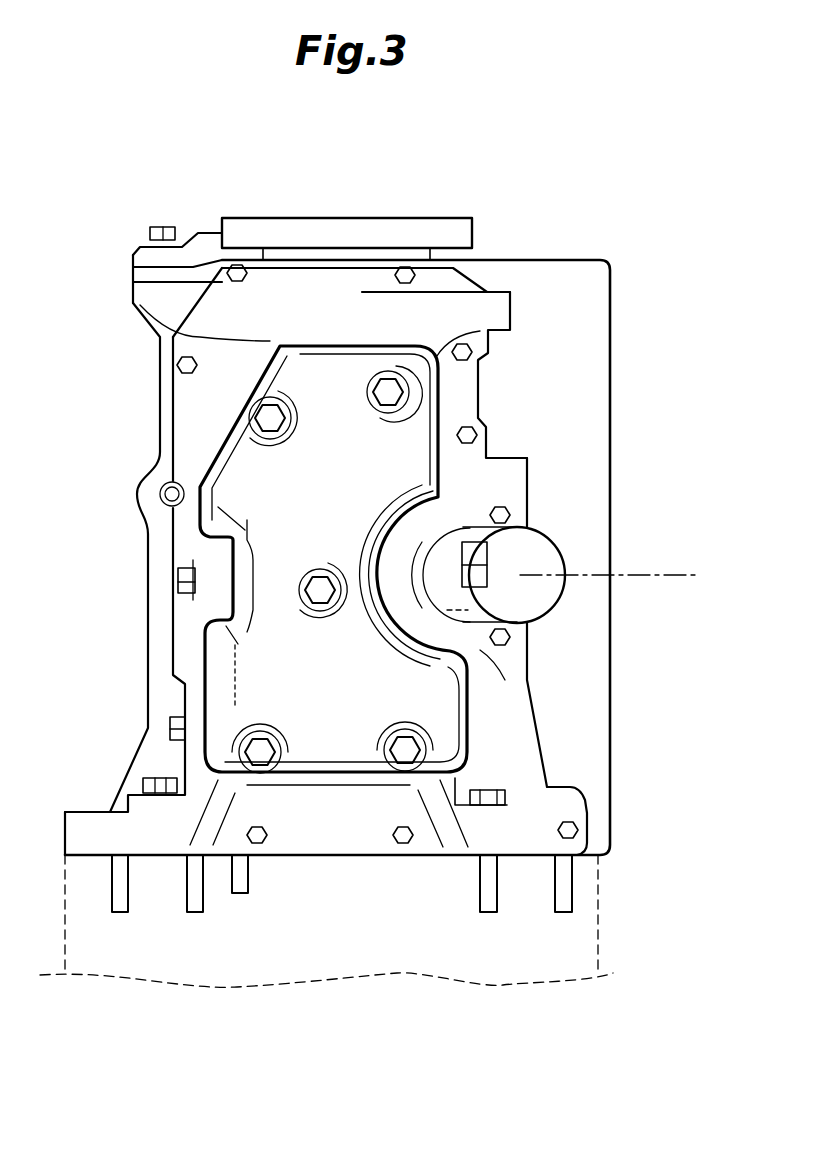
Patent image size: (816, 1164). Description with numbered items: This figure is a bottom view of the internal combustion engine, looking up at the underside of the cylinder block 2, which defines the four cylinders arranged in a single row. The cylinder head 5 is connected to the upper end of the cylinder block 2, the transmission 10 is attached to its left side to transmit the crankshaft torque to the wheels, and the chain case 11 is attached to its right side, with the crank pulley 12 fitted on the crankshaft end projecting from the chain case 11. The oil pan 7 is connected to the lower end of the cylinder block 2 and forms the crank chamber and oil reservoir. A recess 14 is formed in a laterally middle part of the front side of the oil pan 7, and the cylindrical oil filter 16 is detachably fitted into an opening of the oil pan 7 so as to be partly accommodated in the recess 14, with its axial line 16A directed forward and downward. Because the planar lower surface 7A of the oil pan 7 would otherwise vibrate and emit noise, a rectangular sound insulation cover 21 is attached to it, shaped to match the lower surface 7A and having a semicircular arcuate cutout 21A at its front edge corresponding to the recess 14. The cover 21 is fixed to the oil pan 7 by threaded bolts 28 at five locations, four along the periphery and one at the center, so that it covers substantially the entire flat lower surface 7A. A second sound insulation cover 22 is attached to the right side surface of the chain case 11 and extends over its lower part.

The cylinder block 2 is at (158, 633).
The cylinder head 5 is at (597, 501).
The oil pan 7 is at (190, 400).
The lower surface 7A is at (150, 307).
The transmission 10 is at (600, 918).
The chain case 11 is at (145, 272).
The crank pulley 12 is at (398, 218).
The recess 14 is at (495, 657).
The oil filter 16 is at (545, 558).
The axial line 16A is at (662, 576).
The sound insulation cover 21 is at (440, 440).
The semicircular arcuate cutout 21A is at (417, 517).
The sound insulation cover 22 is at (197, 237).
The threaded bolts 28 is at (150, 226).